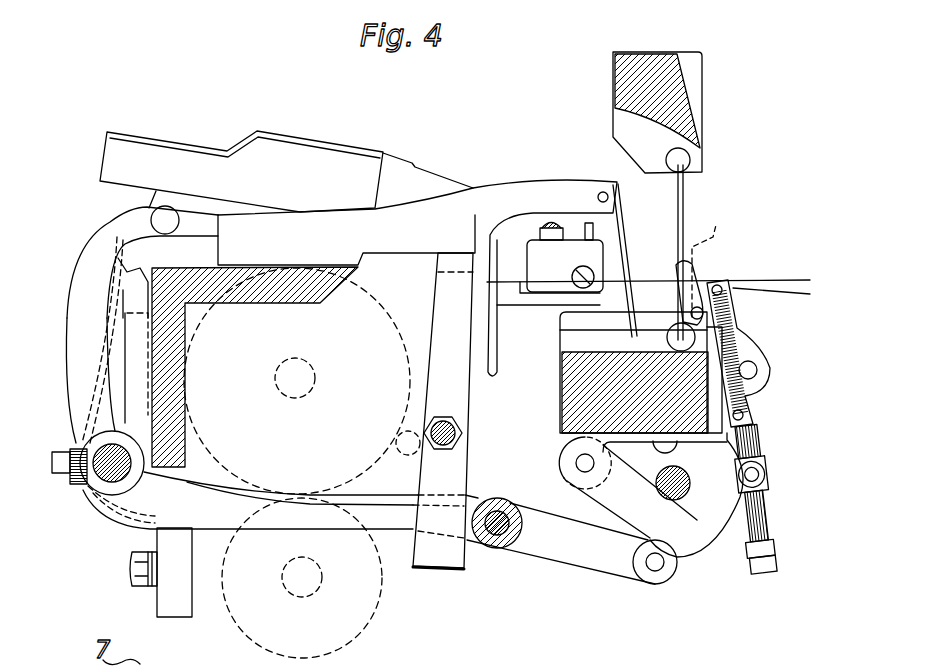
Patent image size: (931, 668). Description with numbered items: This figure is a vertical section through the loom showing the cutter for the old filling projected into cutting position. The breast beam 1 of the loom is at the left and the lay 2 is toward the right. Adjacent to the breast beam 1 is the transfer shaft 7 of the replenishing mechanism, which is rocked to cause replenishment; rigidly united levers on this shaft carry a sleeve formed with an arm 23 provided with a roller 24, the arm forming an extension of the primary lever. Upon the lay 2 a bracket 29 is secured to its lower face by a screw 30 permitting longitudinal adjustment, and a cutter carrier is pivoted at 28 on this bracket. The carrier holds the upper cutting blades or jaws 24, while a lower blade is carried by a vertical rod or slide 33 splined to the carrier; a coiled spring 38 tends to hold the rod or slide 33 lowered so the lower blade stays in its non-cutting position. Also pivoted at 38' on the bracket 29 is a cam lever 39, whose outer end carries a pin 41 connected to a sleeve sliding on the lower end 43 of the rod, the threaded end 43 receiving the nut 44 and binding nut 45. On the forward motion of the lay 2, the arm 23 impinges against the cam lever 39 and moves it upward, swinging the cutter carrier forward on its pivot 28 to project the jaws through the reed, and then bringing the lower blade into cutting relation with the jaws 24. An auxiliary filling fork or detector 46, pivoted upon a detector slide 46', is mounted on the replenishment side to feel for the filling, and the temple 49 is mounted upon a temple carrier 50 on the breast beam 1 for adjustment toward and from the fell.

The breast beam 1 is at (153, 378).
The lay 2 is at (572, 410).
The transfer shaft 7 is at (110, 487).
The arm 23 is at (572, 553).
The roller 24 is at (690, 267).
The pivot 28 is at (758, 370).
The bracket 29 is at (623, 441).
The screw 30 is at (667, 449).
The rod or slide 33 is at (753, 452).
The coiled spring 38 is at (747, 353).
The pivot 38' is at (565, 465).
The cam lever 39 is at (613, 495).
The pin 41 is at (750, 480).
The lower end 43 is at (767, 527).
The nut 44 is at (773, 553).
The binding nut 45 is at (773, 563).
The auxiliary filling fork or detector 46 is at (638, 260).
The detector slide 46' is at (417, 260).
The temple 49 is at (567, 258).
The temple carrier 50 is at (297, 158).